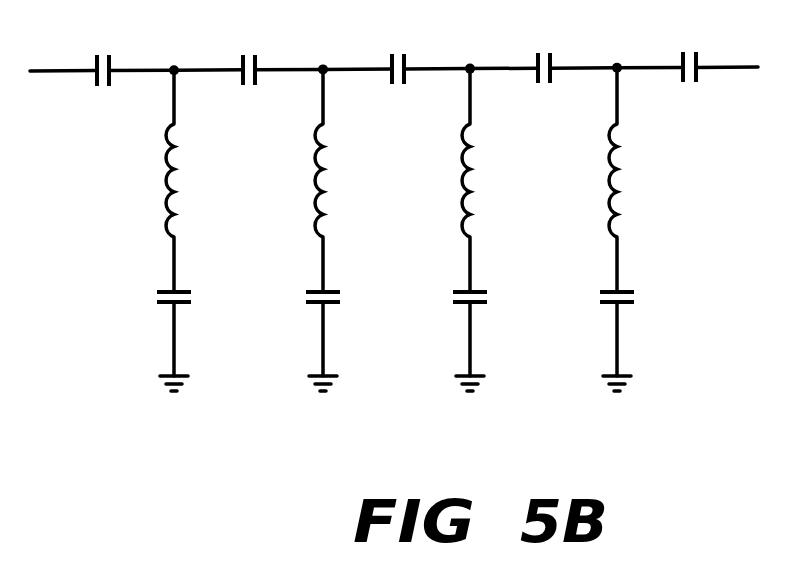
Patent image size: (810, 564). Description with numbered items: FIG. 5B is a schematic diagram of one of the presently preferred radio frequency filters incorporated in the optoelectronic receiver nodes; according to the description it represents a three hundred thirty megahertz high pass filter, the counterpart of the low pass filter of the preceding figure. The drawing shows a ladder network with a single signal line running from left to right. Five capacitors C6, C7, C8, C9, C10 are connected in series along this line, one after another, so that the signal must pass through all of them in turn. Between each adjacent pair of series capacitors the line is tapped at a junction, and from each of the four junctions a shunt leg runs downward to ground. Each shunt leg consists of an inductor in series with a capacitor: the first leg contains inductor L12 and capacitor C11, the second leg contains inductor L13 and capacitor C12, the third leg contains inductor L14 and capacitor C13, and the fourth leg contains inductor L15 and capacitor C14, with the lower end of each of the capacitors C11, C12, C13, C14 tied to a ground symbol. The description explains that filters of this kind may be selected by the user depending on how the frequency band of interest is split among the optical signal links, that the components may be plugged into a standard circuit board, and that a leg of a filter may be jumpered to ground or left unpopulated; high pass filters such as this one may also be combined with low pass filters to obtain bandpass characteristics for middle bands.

The series capacitor C6 is at (96, 62).
The series capacitor C7 is at (243, 62).
The series capacitor C8 is at (392, 62).
The series capacitor C9 is at (538, 61).
The series capacitor C10 is at (683, 61).
The shunt inductor L12 is at (161, 189).
The shunt inductor L13 is at (320, 187).
The shunt inductor L14 is at (466, 187).
The shunt inductor L15 is at (612, 187).
The shunt capacitor C11 is at (172, 291).
The shunt capacitor C12 is at (321, 291).
The shunt capacitor C13 is at (468, 291).
The shunt capacitor C14 is at (615, 291).